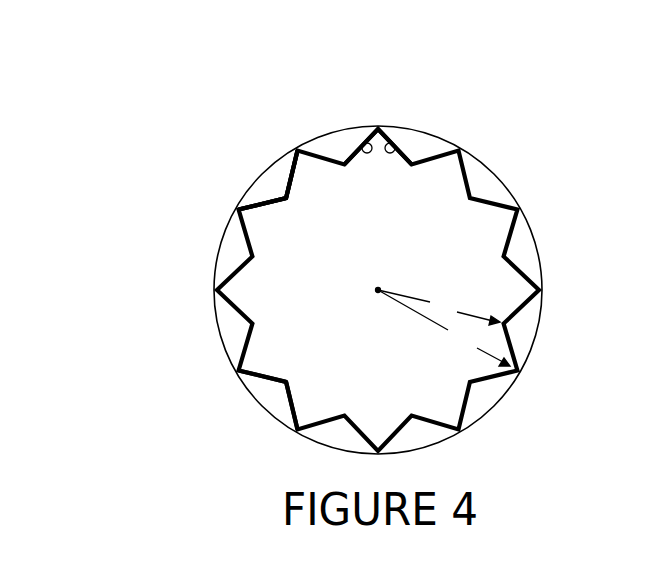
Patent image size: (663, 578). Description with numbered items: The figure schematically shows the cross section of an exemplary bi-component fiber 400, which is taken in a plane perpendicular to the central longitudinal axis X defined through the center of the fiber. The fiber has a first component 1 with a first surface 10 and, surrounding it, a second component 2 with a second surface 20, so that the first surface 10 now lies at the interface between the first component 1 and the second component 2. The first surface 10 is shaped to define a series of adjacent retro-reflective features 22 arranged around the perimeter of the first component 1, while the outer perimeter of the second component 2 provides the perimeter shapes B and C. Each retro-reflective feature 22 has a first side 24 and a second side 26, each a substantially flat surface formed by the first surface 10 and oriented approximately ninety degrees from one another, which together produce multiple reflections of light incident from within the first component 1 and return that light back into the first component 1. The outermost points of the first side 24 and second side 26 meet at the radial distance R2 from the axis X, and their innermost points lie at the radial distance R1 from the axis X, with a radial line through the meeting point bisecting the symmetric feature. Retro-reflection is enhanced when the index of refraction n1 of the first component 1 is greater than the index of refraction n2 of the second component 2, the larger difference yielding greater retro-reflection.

The bi-component fiber 400 is at (163, 77).
The second surface 20 is at (214, 259).
The first component 1 is at (280, 212).
The first surface 10 is at (254, 200).
The second component 2 is at (231, 229).
The retro-reflective feature 22 is at (380, 122).
The first side 24 is at (363, 144).
The second side 26 is at (394, 144).
The central longitudinal axis X is at (386, 325).
The radial distance R1 is at (439, 307).
The radial distance R2 is at (444, 328).
The index of refraction of component 1 n1 is at (286, 246).
The index of refraction of component 2 n2 is at (232, 246).
The perimeter shape B is at (259, 388).
The perimeter shape C is at (281, 431).